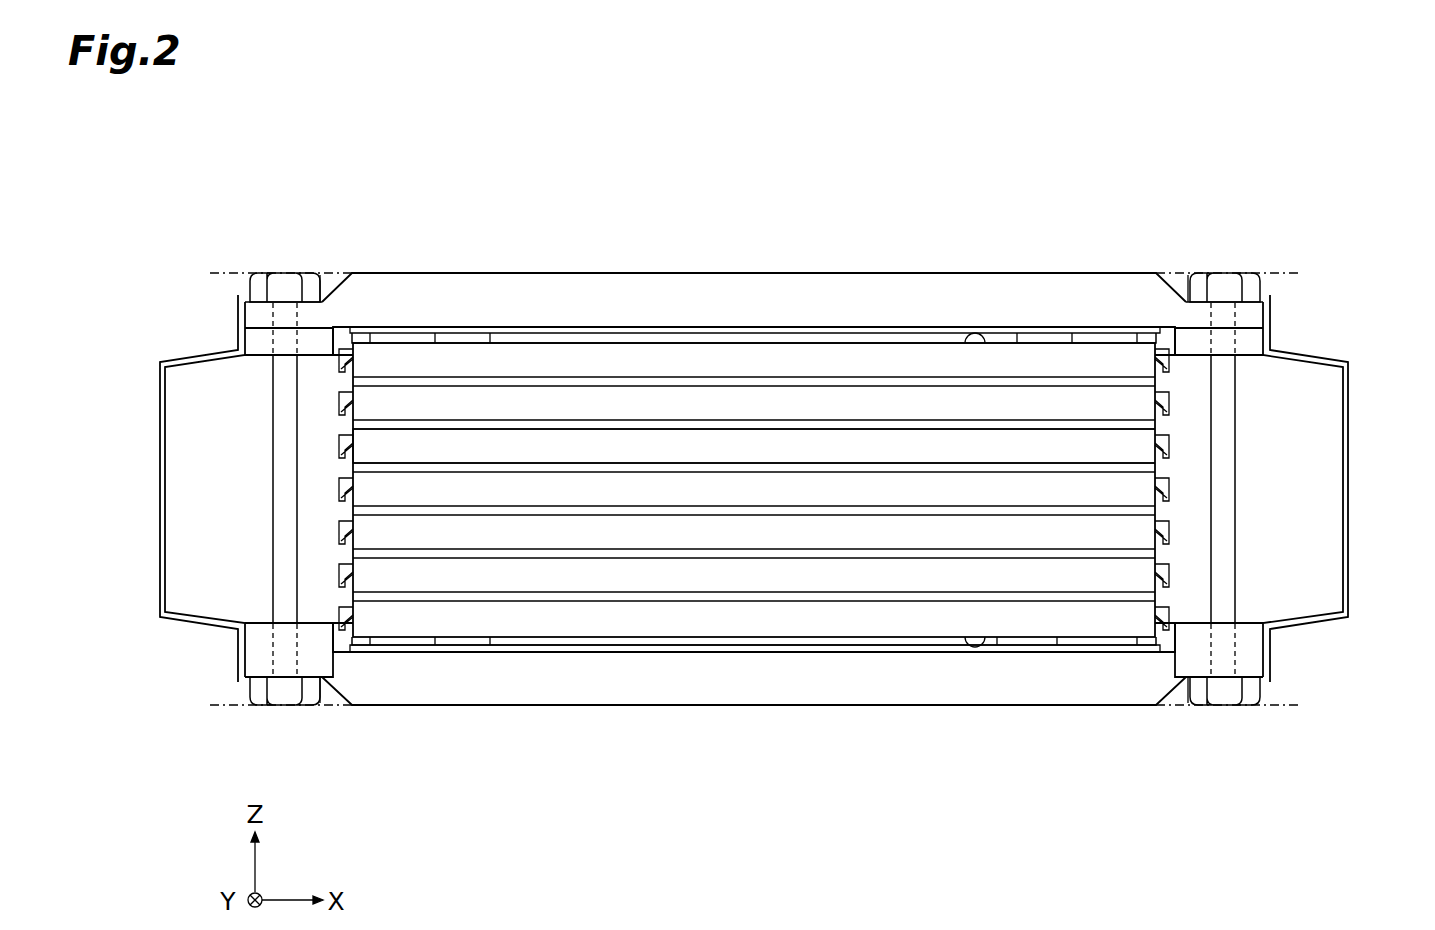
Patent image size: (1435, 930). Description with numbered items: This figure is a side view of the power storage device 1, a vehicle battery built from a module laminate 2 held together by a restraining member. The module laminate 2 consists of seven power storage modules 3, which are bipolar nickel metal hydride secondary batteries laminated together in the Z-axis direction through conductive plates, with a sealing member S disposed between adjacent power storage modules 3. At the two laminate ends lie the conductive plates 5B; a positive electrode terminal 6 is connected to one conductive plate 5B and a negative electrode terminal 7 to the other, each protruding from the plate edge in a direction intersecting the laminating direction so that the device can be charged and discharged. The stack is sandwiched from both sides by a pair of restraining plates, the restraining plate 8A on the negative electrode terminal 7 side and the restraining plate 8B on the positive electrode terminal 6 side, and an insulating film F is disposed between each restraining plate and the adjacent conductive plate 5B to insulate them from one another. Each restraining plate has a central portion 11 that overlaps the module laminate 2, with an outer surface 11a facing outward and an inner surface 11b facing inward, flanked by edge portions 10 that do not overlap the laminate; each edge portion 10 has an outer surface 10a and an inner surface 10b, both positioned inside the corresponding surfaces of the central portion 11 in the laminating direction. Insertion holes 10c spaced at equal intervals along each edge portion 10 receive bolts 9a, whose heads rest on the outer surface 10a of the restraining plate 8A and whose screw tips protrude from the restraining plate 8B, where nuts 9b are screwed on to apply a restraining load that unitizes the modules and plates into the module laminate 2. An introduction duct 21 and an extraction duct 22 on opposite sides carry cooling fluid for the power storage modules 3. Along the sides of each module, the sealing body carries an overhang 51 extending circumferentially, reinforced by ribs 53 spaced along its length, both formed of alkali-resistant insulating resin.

The power storage device 1 is at (1235, 178).
The module laminate 2 is at (1172, 472).
The power storage module 3 is at (597, 448).
The conductive plate 5B is at (1060, 333).
The positive electrode terminal 6 is at (1027, 646).
The negative electrode terminal 7 is at (455, 333).
The restraining plate 8A is at (782, 288).
The restraining plate 8B is at (782, 705).
The bolt 9a is at (288, 276).
The nut 9b is at (288, 702).
The edge portion 10 is at (255, 265).
The outer surface 10a is at (331, 294).
The inner surface 10b is at (262, 357).
The insertion hole 10c is at (280, 330).
The central portion 11 is at (664, 262).
The outer surface 11a is at (712, 272).
The inner surface 11b is at (972, 343).
The introduction duct 21 is at (160, 430).
The extraction duct 22 is at (1348, 430).
The overhang 51 is at (348, 535).
The rib 53 is at (348, 490).
The insulating film F is at (540, 332).
The sealing member S is at (888, 465).